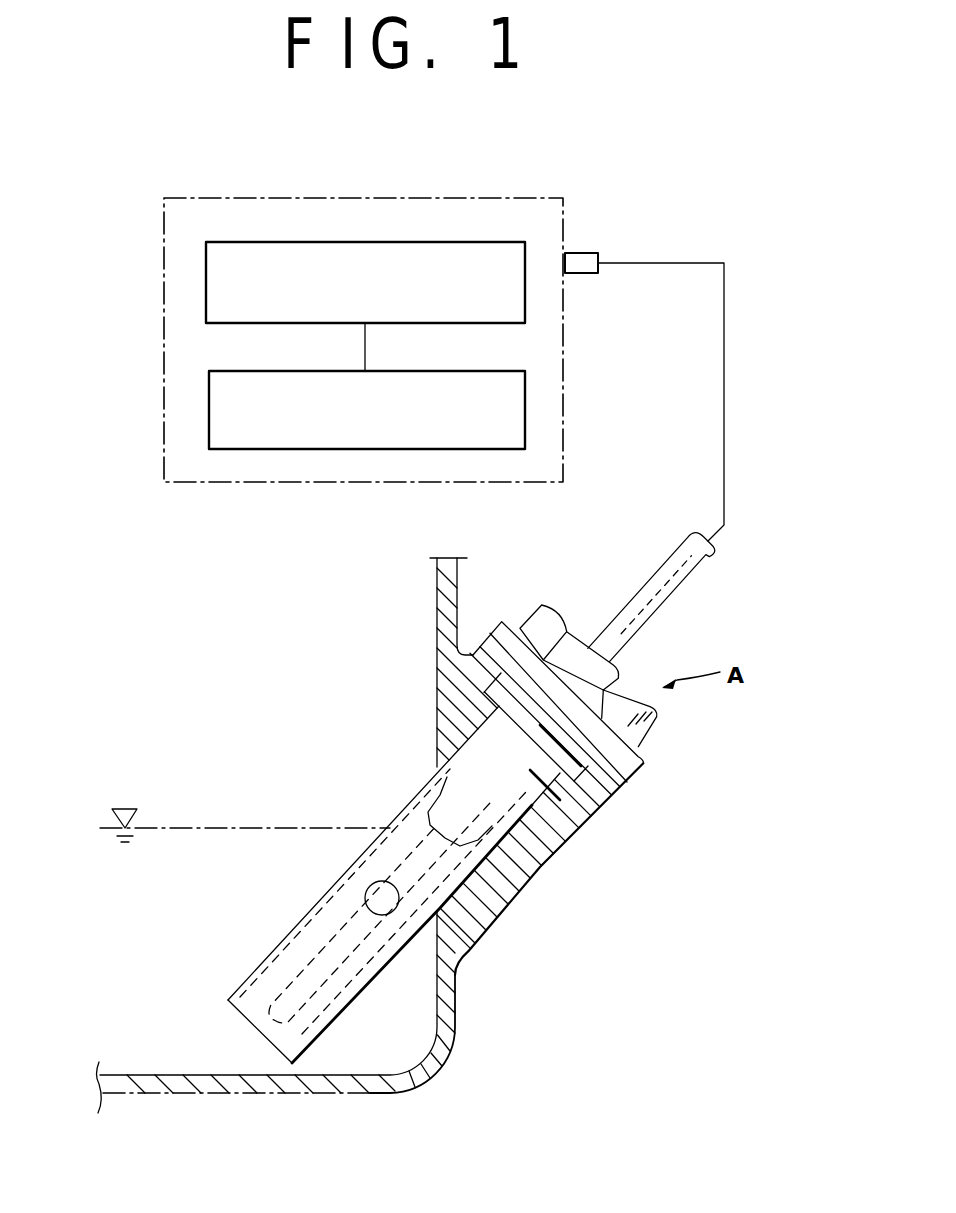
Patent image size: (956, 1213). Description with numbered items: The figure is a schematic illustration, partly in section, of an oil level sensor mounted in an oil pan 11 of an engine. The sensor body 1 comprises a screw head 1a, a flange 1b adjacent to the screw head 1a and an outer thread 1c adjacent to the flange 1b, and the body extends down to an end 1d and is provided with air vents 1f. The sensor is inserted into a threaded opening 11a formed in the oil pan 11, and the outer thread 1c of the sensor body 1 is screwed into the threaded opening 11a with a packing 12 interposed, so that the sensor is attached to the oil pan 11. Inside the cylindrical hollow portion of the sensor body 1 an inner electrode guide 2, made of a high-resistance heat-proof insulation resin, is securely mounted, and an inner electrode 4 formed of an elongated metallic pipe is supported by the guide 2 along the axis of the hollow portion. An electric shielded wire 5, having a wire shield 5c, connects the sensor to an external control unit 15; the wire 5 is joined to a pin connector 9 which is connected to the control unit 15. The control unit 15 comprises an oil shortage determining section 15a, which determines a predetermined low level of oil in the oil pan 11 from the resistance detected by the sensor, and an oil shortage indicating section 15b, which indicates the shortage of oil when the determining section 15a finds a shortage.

The sensor body 1 is at (312, 913).
The screw head 1a is at (642, 727).
The flange 1b is at (645, 765).
The outer thread 1c is at (592, 817).
The end of the sensor body 1d is at (257, 1027).
The air vents 1f is at (387, 914).
The inner electrode guide 2 is at (440, 797).
The inner electrode 4 is at (300, 972).
The electric shielded wire 5 is at (655, 582).
The wire shield 5c is at (672, 597).
The pin connector 9 is at (586, 268).
The oil pan 11 is at (456, 1008).
The threaded opening 11a is at (560, 850).
The packing 12 is at (630, 787).
The control unit 15 is at (313, 484).
The oil shortage determining section 15a is at (400, 241).
The oil shortage indicating section 15b is at (388, 452).